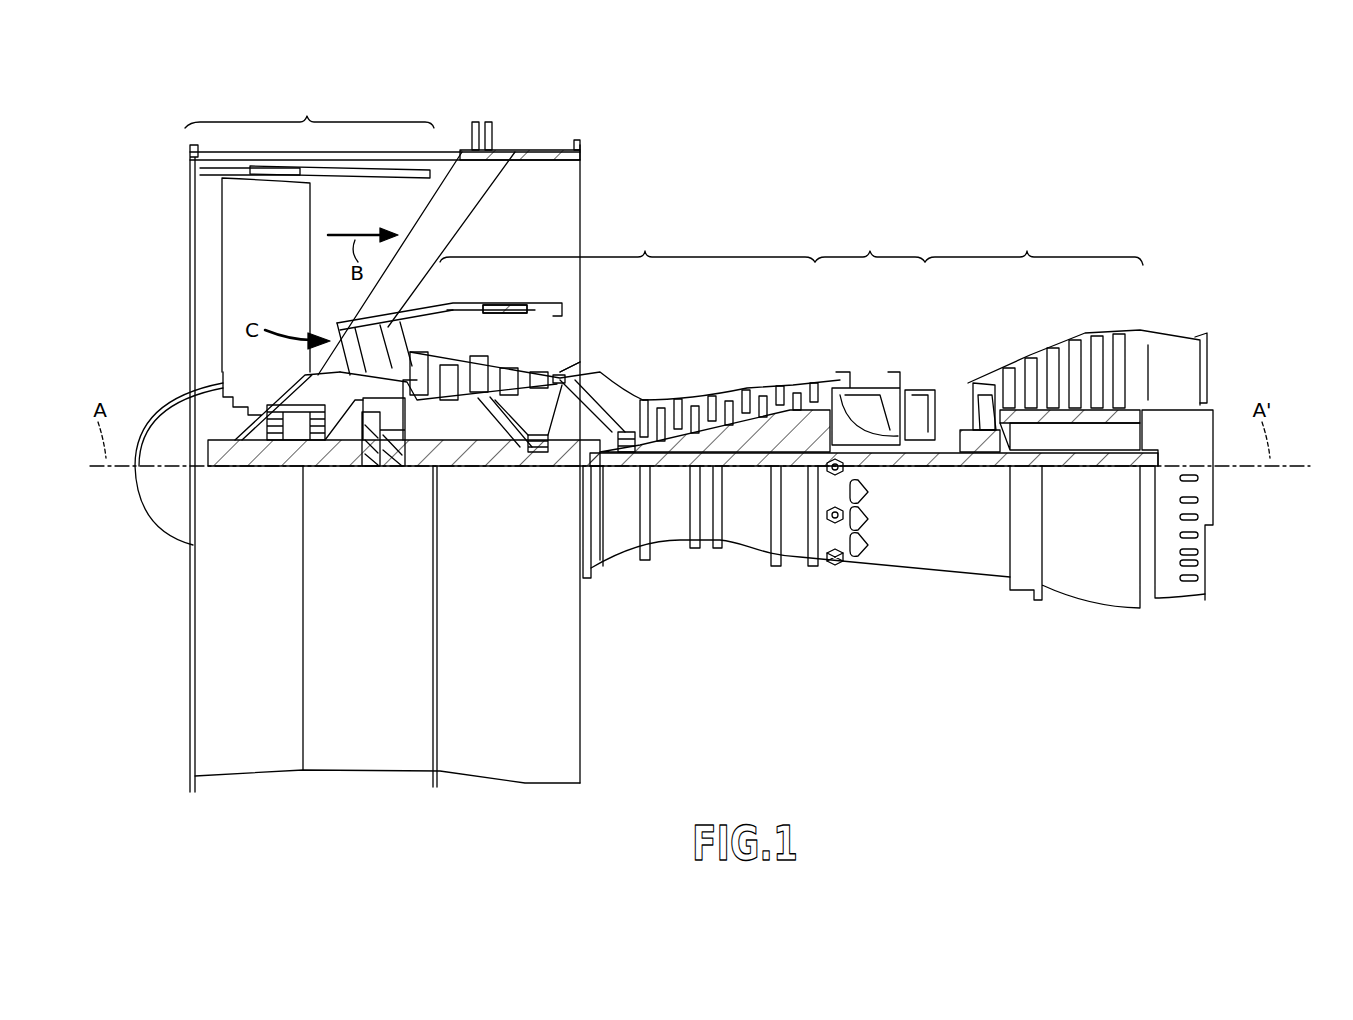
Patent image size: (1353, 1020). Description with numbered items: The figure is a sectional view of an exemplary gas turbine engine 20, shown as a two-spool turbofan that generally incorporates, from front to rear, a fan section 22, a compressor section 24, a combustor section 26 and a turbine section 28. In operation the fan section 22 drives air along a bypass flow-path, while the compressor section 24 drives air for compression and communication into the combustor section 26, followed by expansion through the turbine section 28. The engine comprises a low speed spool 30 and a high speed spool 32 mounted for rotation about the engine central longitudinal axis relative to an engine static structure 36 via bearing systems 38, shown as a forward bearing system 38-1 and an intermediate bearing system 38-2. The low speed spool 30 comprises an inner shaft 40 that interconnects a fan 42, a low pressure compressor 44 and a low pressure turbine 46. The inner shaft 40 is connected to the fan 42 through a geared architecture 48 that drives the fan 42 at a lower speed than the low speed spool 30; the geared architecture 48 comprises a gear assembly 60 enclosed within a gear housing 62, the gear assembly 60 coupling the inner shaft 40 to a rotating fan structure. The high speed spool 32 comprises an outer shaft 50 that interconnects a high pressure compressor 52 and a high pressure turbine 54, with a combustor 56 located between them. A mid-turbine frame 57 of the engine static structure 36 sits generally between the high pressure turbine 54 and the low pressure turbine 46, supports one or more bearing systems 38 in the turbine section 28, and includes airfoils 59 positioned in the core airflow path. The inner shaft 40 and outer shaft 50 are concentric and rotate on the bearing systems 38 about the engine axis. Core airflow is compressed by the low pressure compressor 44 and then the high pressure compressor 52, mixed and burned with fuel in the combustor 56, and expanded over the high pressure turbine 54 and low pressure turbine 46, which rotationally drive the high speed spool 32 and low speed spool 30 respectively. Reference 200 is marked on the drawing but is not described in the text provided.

The gas turbine engine 20 is at (930, 178).
The fan section 22 is at (309, 108).
The compressor section 24 is at (627, 241).
The combustor section 26 is at (870, 241).
The turbine section 28 is at (1034, 242).
The low speed spool 30 is at (748, 510).
The high speed spool 32 is at (792, 428).
The engine static structure 36 is at (165, 787).
The bearing system 38 is at (990, 466).
The bearing system 38-1 is at (277, 445).
The bearing system 38-2 is at (536, 458).
The inner shaft 40 is at (606, 480).
The fan 42 is at (277, 278).
The low pressure compressor section 44 is at (562, 352).
The low pressure turbine section 46 is at (1075, 345).
The geared architecture 48 is at (398, 495).
The outer shaft 50 is at (868, 462).
The high pressure compressor 52 is at (748, 398).
The high pressure turbine section 54 is at (918, 382).
The combustor 56 is at (882, 403).
The mid-turbine frame 57 is at (990, 388).
The airfoils 59 is at (992, 395).
The gear assembly 60 is at (410, 446).
The gear housing 62 is at (410, 405).
The core flow path 200 is at (645, 360).